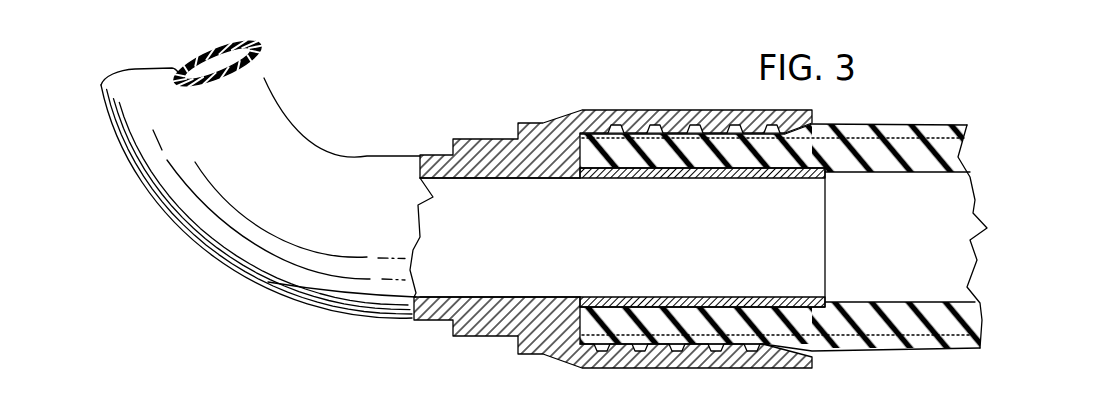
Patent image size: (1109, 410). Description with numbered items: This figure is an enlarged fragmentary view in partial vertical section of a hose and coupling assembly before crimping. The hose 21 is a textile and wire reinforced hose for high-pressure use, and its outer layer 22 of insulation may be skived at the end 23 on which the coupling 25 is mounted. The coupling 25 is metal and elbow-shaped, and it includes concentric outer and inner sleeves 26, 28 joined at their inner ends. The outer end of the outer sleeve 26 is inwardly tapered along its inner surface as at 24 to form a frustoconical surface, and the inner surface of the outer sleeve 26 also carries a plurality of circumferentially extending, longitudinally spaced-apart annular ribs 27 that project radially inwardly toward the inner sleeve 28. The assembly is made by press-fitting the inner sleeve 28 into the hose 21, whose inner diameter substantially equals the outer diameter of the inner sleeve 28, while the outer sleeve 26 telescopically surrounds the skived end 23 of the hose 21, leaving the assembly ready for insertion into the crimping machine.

The hose 21 is at (703, 233).
The outer layer of insulation 22 is at (897, 343).
The skived end of the hose 23 is at (637, 182).
The frustoconical surface 24 is at (818, 132).
The coupling 25 is at (320, 161).
The outer sleeve 26 is at (650, 110).
The annular ribs 27 is at (696, 126).
The inner sleeve 28 is at (820, 233).